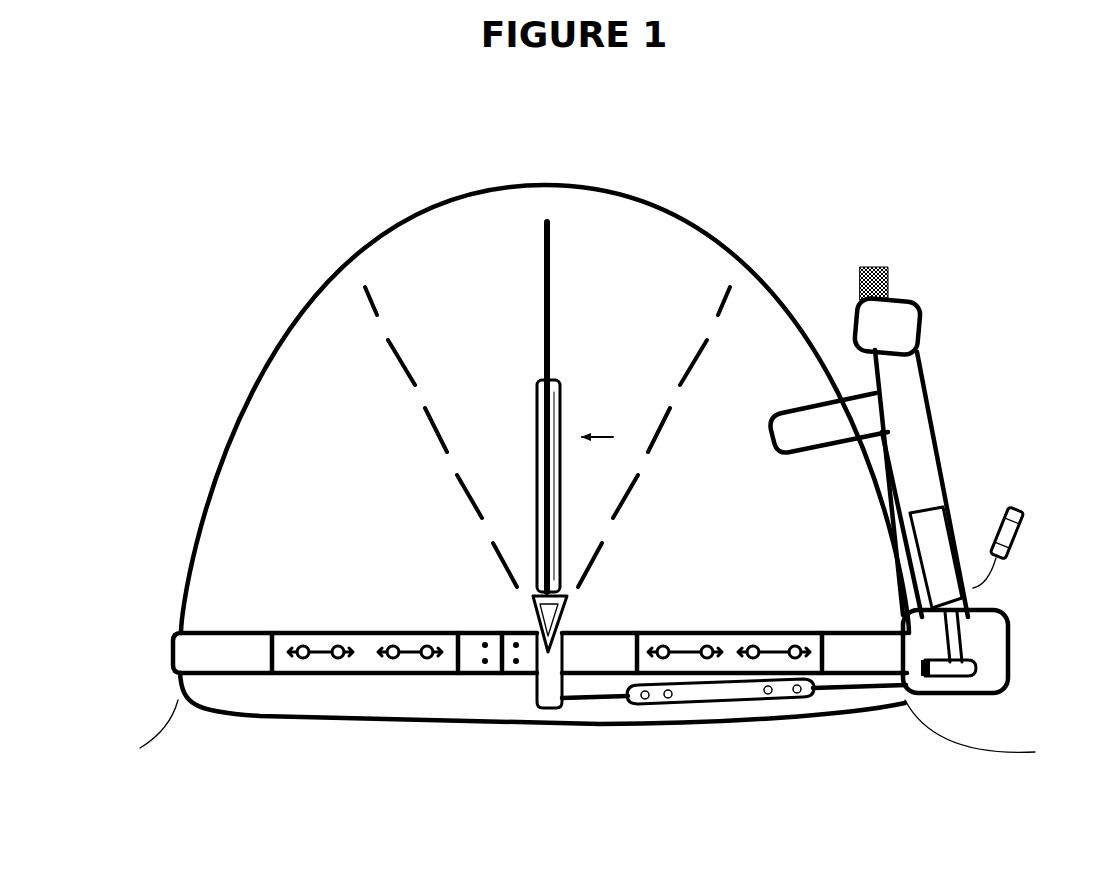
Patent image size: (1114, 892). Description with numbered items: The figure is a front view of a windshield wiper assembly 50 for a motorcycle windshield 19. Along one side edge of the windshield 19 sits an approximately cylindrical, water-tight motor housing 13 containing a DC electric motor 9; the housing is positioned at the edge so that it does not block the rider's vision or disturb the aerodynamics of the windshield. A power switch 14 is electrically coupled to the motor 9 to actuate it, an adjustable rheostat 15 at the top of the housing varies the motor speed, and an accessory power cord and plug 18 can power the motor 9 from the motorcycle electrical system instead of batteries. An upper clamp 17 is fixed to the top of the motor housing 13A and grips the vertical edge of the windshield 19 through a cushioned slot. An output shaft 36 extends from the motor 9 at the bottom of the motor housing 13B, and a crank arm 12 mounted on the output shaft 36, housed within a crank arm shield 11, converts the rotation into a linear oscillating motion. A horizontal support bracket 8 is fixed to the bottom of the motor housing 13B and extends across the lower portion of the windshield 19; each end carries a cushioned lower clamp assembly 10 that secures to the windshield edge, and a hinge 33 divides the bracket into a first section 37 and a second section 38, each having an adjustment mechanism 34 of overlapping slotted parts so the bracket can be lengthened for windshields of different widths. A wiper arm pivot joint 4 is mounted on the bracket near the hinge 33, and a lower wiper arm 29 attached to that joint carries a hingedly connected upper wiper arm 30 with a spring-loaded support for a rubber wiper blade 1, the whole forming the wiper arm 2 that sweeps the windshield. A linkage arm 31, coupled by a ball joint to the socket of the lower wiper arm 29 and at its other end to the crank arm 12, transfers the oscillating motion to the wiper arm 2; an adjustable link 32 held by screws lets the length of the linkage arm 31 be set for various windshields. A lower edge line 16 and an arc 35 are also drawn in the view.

The wiper assembly 50 is at (712, 146).
The windshield 19 is at (297, 322).
The rubber wiper blade 1 is at (551, 313).
The upper wiper arm 30 is at (538, 467).
The wiper arm 2 is at (604, 437).
The wiper arm pivot joint 4 is at (556, 700).
The lower wiper arm 29 is at (537, 690).
The horizontal support bracket 8 is at (210, 633).
The lower clamp assembly 10 is at (862, 633).
The lower shell edge 16 is at (218, 676).
The adjustment mechanism 34 is at (360, 633).
The hinge 33 is at (478, 676).
The first section 37 is at (448, 596).
The second section 38 is at (652, 588).
The linkage arm 31 is at (606, 703).
The adjustable link 32 is at (723, 700).
The lower edge arc 35 is at (940, 735).
The upper clamp 17 is at (815, 453).
The motor housing 13 is at (937, 449).
The top of the motor housing 13A is at (925, 412).
The bottom of the motor housing 13B is at (1010, 645).
The power switch 14 is at (927, 363).
The adjustable rheostat 15 is at (892, 278).
The DC electric motor 9 is at (932, 532).
The accessory power cord and plug 18 is at (1012, 505).
The crank arm shield 11 is at (1010, 666).
The crank arm 12 is at (996, 690).
The output shaft 36 is at (958, 628).